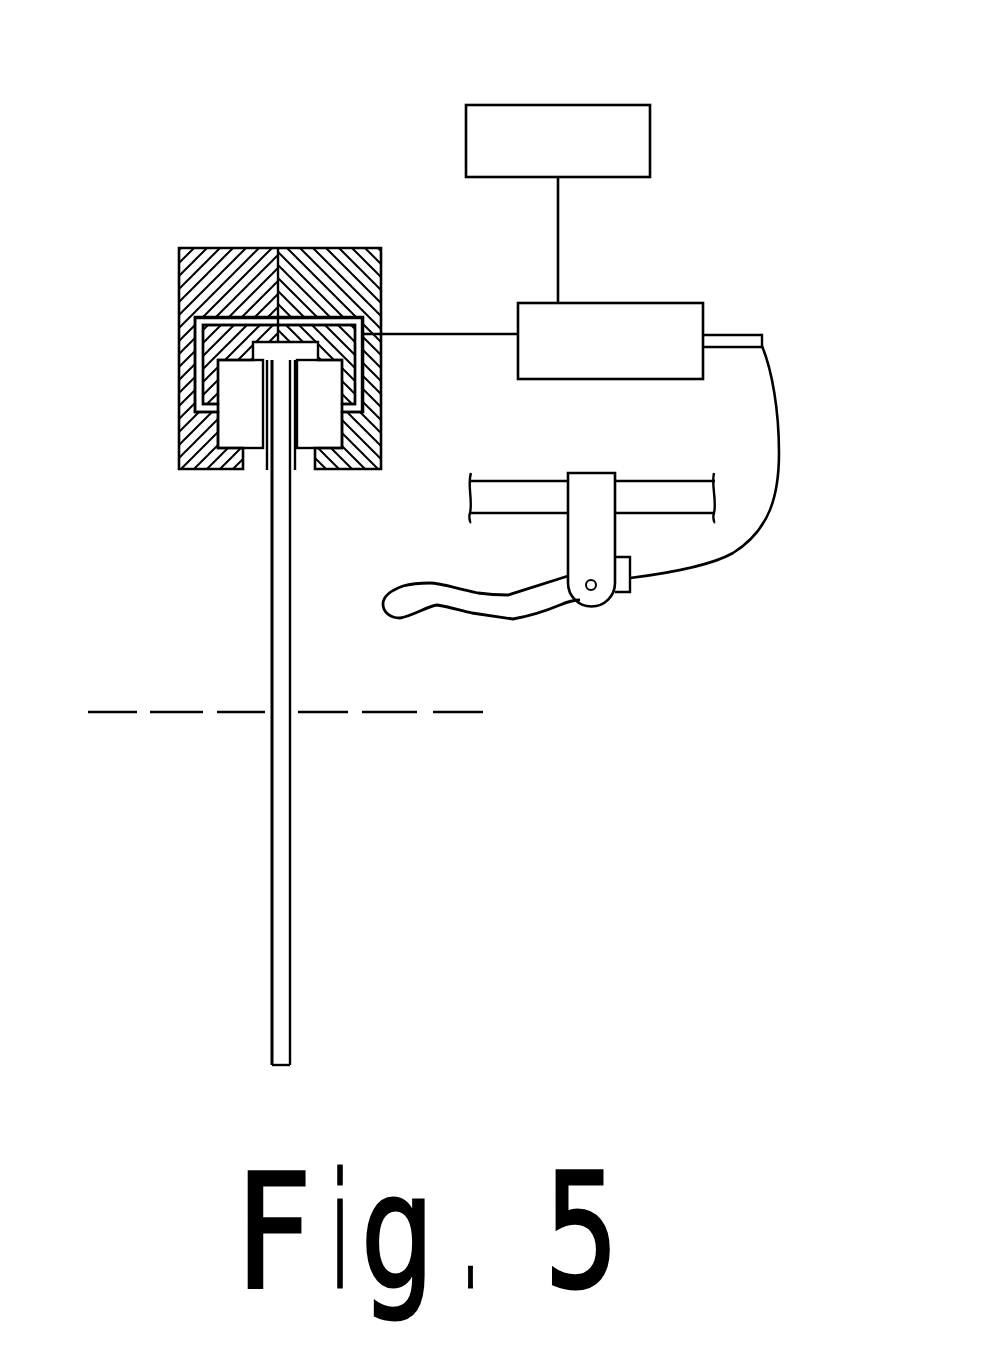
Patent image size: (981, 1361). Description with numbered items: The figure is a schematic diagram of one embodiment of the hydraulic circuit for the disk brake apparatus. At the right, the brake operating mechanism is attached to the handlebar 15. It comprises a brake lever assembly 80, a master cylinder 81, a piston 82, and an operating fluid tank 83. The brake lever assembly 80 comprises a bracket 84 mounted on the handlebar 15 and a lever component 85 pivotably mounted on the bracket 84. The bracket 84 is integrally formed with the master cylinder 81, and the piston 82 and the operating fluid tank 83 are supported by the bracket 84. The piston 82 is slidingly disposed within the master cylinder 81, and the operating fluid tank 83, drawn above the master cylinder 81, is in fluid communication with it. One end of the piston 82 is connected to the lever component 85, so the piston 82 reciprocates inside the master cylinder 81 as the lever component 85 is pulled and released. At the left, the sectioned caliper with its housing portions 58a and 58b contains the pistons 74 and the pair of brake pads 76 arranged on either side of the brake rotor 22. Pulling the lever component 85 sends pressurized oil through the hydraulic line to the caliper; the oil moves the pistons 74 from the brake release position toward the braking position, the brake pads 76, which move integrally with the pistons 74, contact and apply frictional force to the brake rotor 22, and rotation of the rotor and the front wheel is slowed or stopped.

The handlebar 15 is at (518, 482).
The brake rotor 22 is at (292, 805).
The caliper housing first portion 58a is at (181, 405).
The caliper housing second portion / fluid passage 58b is at (366, 386).
The pistons 74 is at (230, 430).
The brake pads 76 is at (263, 450).
The brake lever assembly 80 is at (593, 621).
The master cylinder 81 is at (632, 302).
The piston 82 is at (722, 333).
The operating fluid tank 83 is at (597, 103).
The bracket 84 is at (569, 555).
The lever component 85 is at (479, 619).